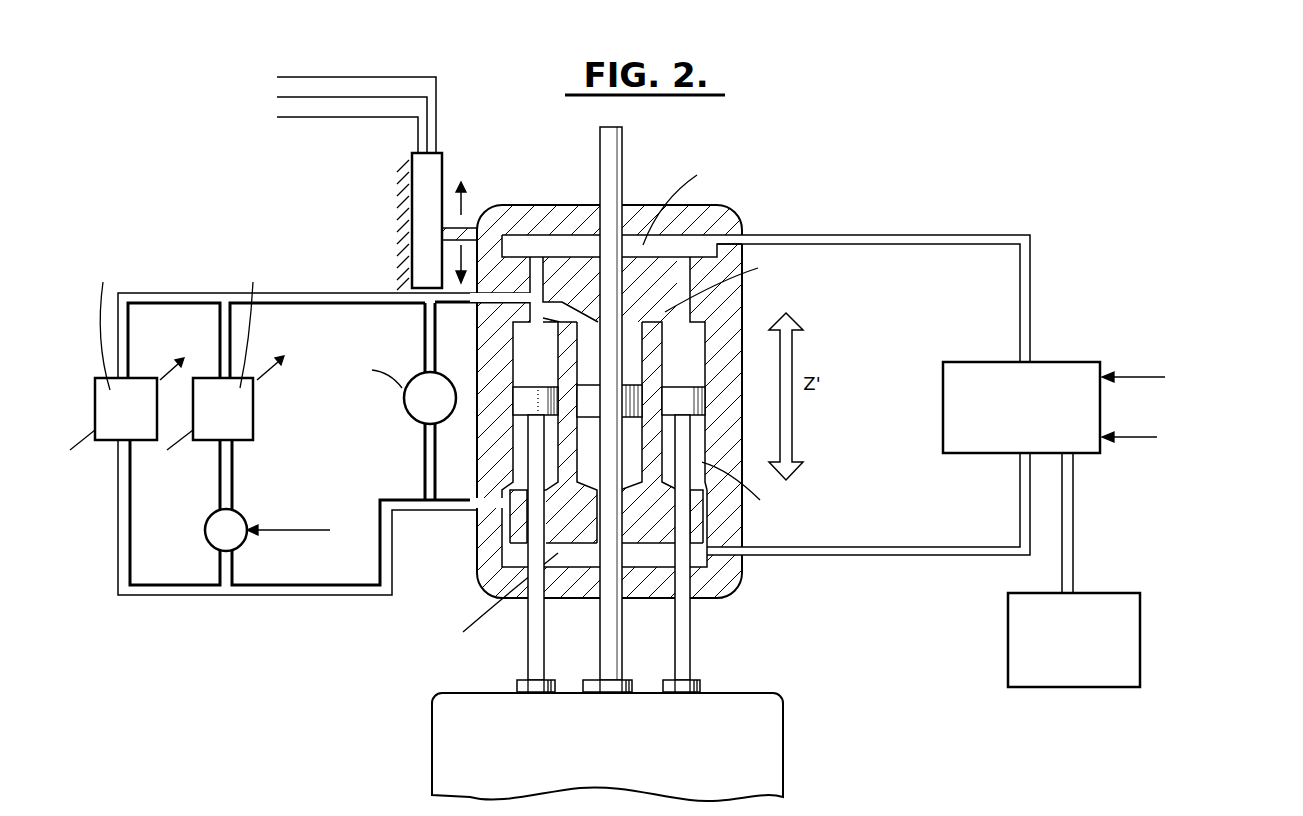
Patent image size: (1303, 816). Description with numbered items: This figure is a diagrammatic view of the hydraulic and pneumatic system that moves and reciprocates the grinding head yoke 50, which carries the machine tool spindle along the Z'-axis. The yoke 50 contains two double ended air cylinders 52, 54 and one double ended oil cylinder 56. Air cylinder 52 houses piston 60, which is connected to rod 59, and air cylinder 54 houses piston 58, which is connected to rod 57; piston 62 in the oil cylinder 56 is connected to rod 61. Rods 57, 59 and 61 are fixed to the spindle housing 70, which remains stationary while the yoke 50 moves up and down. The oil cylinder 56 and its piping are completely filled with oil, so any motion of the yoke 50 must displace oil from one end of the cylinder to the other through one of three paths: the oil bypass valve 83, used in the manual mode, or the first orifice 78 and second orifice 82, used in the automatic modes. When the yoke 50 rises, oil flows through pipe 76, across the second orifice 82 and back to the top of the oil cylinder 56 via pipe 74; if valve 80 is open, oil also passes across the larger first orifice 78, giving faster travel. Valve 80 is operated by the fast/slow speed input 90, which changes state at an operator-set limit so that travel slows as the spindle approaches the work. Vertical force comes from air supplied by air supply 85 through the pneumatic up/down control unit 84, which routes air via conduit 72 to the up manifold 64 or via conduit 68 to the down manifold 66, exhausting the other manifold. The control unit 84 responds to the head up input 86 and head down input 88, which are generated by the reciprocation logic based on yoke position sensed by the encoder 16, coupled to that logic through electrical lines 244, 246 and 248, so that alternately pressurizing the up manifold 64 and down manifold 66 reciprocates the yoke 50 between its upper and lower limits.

The encoder 16 is at (440, 162).
The grinding head yoke 50 is at (684, 377).
The air cylinder 52 is at (671, 349).
The air cylinder 54 is at (524, 349).
The oil cylinder 56 is at (592, 358).
The rod 57 is at (538, 657).
The piston 58 is at (525, 402).
The rod 59 is at (684, 650).
The piston 60 is at (683, 393).
The rod 61 is at (610, 657).
The piston 62 is at (586, 407).
The up manifold 64 is at (543, 245).
The down manifold 66 is at (697, 558).
The air conduit 68 is at (855, 557).
The spindle housing 70 is at (763, 710).
The air conduit 72 is at (917, 235).
The pipe 74 is at (329, 420).
The pipe 76 is at (207, 598).
The first orifice 78 is at (238, 408).
The valve 80 is at (207, 538).
The second orifice 82 is at (135, 387).
The oil bypass valve 83 is at (402, 409).
The pneumatic up/down control unit 84 is at (1063, 364).
The air supply 85 is at (1127, 620).
The head up input 86 is at (1130, 373).
The head down input 88 is at (1130, 434).
The fast/slow speed input 90 is at (256, 525).
The electrical line 244 is at (313, 77).
The electrical line 246 is at (383, 97).
The electrical line 248 is at (375, 118).